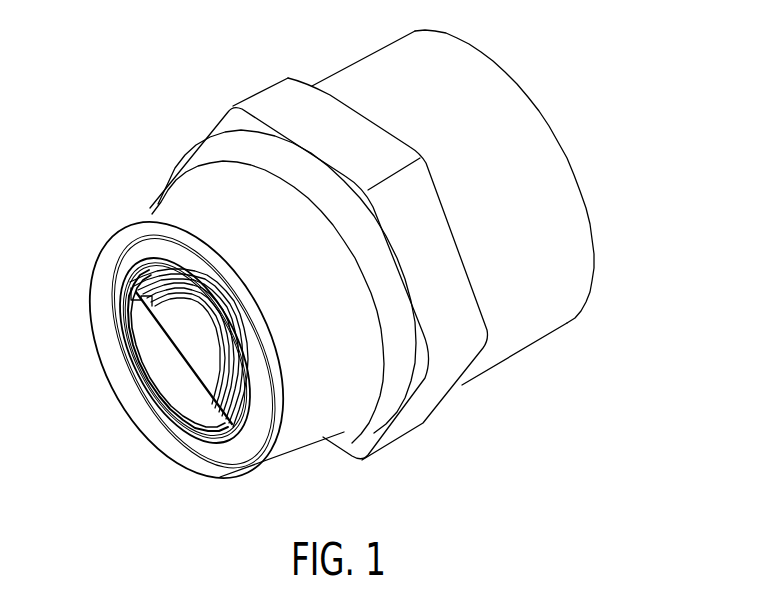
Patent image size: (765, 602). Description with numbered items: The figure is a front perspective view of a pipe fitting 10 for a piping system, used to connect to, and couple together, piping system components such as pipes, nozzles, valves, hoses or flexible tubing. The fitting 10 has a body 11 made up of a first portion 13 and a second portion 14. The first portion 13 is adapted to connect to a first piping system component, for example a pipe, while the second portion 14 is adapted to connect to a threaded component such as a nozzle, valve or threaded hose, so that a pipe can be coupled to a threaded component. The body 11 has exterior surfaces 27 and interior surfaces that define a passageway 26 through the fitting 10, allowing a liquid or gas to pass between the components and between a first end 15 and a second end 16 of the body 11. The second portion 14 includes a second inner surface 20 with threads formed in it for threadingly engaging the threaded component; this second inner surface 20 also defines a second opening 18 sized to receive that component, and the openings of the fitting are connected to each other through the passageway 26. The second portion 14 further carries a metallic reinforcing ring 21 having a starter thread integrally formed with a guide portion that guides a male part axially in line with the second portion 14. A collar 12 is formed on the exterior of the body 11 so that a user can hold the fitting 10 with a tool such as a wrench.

The fitting 10 is at (638, 75).
The body 11 is at (502, 373).
The collar 12 is at (297, 78).
The first portion 13 is at (543, 343).
The second portion 14 is at (293, 450).
The first end 15 is at (596, 203).
The second end 16 is at (96, 317).
The second opening 18 is at (153, 398).
The second inner surface 20 is at (176, 346).
The metallic reinforcing ring 21 is at (133, 317).
The passageway 26 is at (211, 362).
The exterior surfaces 27 is at (163, 212).